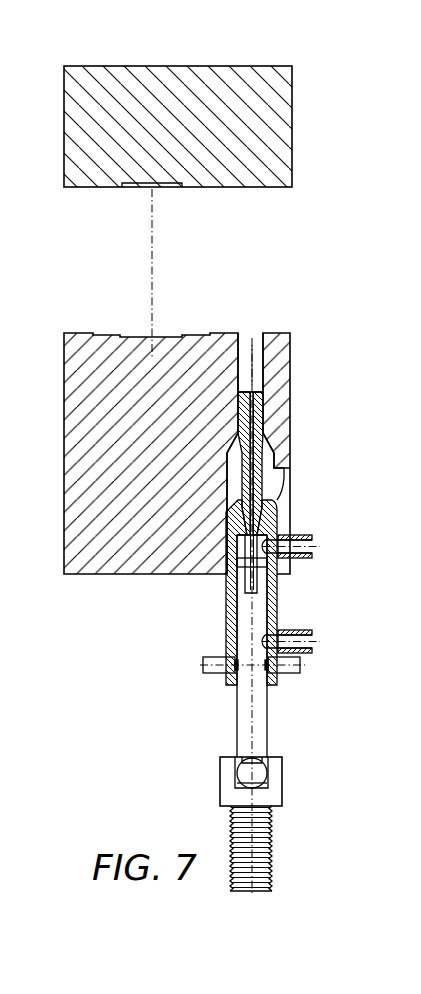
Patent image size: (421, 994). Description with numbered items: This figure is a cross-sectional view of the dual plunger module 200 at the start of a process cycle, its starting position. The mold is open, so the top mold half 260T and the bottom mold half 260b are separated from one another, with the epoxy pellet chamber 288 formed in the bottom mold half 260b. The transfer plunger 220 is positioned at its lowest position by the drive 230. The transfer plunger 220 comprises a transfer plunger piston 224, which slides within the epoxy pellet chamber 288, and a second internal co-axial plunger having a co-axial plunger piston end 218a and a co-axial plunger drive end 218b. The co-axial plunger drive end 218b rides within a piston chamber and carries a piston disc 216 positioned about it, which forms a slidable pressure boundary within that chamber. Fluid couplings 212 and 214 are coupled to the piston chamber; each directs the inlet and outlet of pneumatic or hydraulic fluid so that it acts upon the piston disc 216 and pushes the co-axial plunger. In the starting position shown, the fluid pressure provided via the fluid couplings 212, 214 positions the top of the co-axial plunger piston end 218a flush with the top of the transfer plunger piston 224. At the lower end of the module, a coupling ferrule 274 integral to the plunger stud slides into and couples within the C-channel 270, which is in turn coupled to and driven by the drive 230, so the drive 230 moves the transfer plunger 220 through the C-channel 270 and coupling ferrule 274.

The top mold half 260T is at (231, 66).
The bottom mold half 260b is at (290, 372).
The epoxy pellet chamber 288 is at (250, 338).
The co-axial plunger piston end 218a is at (262, 408).
The transfer plunger piston 224 is at (262, 424).
The transfer plunger 220 is at (228, 618).
The co-axial plunger drive end 218b is at (262, 598).
The piston disc 216 is at (263, 580).
The fluid coupling 212 is at (310, 540).
The fluid coupling 214 is at (313, 633).
The dual plunger module 200 is at (170, 678).
The C-channel 270 is at (282, 780).
The coupling ferrule 274 is at (245, 775).
The drive 230 is at (272, 845).